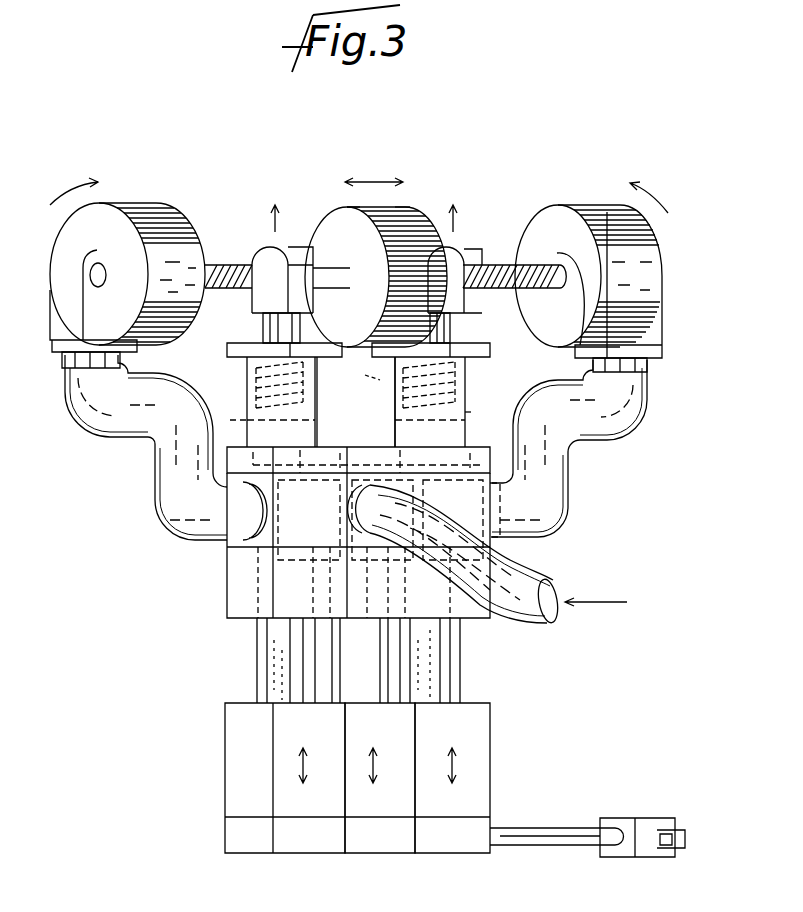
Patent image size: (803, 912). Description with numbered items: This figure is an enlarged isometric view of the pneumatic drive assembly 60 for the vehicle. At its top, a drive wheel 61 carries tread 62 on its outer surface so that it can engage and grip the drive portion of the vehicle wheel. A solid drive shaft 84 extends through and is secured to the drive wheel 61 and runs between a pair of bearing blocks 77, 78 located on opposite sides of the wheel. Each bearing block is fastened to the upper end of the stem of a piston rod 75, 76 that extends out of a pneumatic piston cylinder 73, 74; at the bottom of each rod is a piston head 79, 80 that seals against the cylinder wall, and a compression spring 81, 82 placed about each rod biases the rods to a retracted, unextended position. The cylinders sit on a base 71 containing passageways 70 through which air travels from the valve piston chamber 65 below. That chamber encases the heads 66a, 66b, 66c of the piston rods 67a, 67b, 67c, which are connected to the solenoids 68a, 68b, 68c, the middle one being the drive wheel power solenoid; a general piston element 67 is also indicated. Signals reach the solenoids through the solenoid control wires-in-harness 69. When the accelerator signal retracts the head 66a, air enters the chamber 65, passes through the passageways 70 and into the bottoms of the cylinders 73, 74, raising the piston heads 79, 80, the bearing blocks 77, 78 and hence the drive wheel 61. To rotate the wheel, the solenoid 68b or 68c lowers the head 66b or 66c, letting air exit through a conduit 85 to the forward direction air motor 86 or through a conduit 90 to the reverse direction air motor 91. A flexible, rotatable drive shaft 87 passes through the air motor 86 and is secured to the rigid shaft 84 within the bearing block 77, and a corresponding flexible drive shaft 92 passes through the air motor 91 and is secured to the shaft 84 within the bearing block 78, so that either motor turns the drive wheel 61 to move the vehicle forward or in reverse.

The pneumatic drive assembly 60 is at (463, 154).
The drive wheel 61 is at (338, 212).
The tread 62 is at (425, 220).
The valve piston chamber 65 is at (214, 581).
The valve piston head 66a is at (359, 569).
The piston head 66b is at (240, 509).
The piston head 66c is at (498, 546).
The discharge tube 67 is at (533, 580).
The piston rod 67a is at (372, 693).
The piston rod 67b is at (268, 663).
The piston rod 67c is at (440, 655).
The drive wheel power solenoid 68a is at (378, 806).
The solenoid 68b is at (276, 792).
The solenoid 68c is at (473, 768).
The solenoid control wires-in-harness 69 is at (670, 813).
The passageways 70 is at (338, 460).
The base 71 is at (235, 457).
The pneumatic piston cylinder 73 is at (236, 367).
The pneumatic piston cylinder 74 is at (472, 374).
The piston rod 75 is at (273, 323).
The piston rod 76 is at (445, 330).
The bearing block 77 is at (256, 250).
The bearing block 78 is at (462, 250).
The piston head 79 is at (230, 419).
The piston head 80 is at (460, 411).
The compression spring 81 is at (321, 355).
The compression spring 82 is at (396, 396).
The solid drive shaft 84 is at (330, 271).
The conduit 85 is at (80, 413).
The forward direction air motor 86 is at (153, 224).
The flexible rotatable drive shaft 87 is at (227, 266).
The conduit 90 is at (627, 412).
The reverse direction air motor 91 is at (640, 243).
The flexible rotatable drive shaft 92 is at (492, 268).